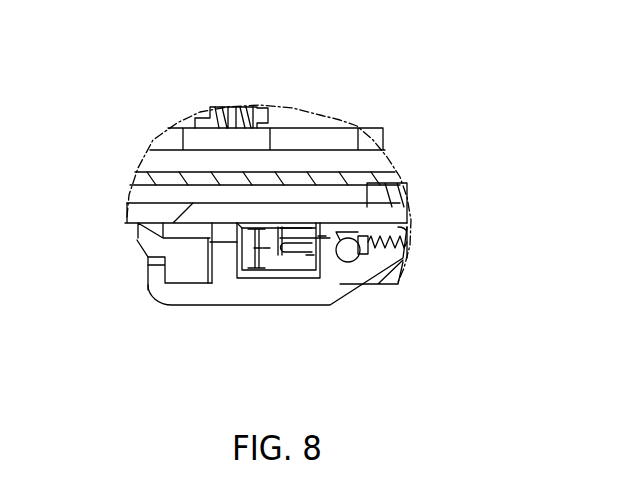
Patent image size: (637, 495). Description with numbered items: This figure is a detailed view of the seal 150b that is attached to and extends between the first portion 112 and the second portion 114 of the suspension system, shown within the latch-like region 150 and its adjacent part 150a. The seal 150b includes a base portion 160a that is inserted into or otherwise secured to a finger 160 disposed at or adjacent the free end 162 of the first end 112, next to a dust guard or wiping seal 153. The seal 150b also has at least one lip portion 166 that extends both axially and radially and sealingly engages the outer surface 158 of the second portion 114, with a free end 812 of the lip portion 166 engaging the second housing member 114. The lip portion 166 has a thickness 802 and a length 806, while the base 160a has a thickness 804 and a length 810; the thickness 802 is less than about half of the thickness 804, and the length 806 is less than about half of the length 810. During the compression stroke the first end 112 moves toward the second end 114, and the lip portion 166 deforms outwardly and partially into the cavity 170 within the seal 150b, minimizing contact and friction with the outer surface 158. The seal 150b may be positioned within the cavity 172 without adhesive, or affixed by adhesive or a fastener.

The first portion 112 is at (195, 92).
The second portion 114 is at (157, 213).
The latch housing 150 is at (305, 291).
The housing block 150a is at (197, 280).
The seal 150b is at (242, 247).
The dust guard 153 is at (183, 260).
The outer surface 158 is at (408, 225).
The finger 160 is at (238, 262).
The base portion 160a is at (267, 237).
The free end 162 is at (170, 313).
The lip portion 166 is at (312, 242).
The cavity 170 is at (353, 285).
The cavity 172 is at (318, 283).
The thickness 802 is at (357, 254).
The thickness 804 is at (263, 250).
The length 806 is at (310, 253).
The length 810 is at (258, 248).
The free end 812 is at (322, 238).